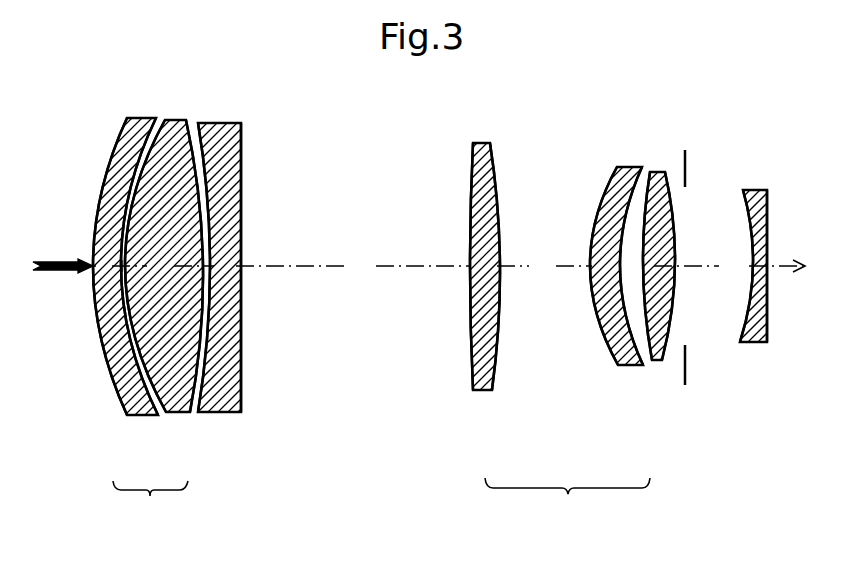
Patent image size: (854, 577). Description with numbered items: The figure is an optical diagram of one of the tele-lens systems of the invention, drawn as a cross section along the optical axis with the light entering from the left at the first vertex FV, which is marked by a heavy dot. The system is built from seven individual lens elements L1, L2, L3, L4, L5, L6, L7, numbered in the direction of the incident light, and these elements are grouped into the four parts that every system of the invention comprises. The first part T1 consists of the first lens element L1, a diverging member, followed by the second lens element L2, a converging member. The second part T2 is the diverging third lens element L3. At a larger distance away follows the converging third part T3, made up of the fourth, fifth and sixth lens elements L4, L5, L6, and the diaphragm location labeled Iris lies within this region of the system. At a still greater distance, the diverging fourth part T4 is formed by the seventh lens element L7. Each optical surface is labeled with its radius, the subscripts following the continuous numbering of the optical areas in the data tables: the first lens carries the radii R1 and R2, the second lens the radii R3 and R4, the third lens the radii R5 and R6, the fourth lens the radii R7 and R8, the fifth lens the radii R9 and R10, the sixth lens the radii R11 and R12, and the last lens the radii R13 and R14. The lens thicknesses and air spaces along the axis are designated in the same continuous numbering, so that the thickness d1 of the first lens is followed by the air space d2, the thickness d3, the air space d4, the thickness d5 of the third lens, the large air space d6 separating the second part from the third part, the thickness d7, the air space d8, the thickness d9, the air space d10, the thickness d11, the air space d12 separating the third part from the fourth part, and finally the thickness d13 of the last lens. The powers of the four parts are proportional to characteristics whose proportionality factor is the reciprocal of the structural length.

The first vertex FV is at (88, 264).
The first lens element L1 is at (145, 404).
The second lens element L2 is at (175, 404).
The third lens element L3 is at (218, 410).
The fourth lens element L4 is at (482, 390).
The fifth lens element L5 is at (620, 367).
The sixth lens element L6 is at (655, 361).
The seventh lens element L7 is at (755, 343).
The first part T1 is at (150, 498).
The second part T2 is at (232, 485).
The third part T3 is at (568, 496).
The fourth part T4 is at (755, 456).
The diaphragm location Iris is at (684, 372).
The radius of first optical area R1 is at (110, 152).
The radius of second optical area R2 is at (143, 122).
The radius of third optical area R3 is at (169, 121).
The radius of fourth optical area R4 is at (191, 125).
The radius of fifth optical area R5 is at (198, 136).
The radius of sixth optical area R6 is at (242, 165).
The radius of seventh optical area R7 is at (470, 168).
The radius of eighth optical area R8 is at (497, 175).
The radius of ninth optical area R9 is at (606, 196).
The radius of tenth optical area R10 is at (635, 167).
The radius of eleventh optical area R11 is at (653, 172).
The radius of twelfth optical area R12 is at (676, 204).
The radius of thirteenth optical area R13 is at (743, 205).
The radius of fourteenth optical area R14 is at (768, 205).
The lens thickness d1 is at (107, 274).
The air space d2 is at (118, 272).
The lens thickness d3 is at (164, 274).
The air space d4 is at (208, 285).
The lens thickness d5 is at (225, 274).
The air space d6 is at (355, 271).
The lens thickness d7 is at (485, 273).
The air space d8 is at (545, 272).
The lens thickness d9 is at (605, 272).
The air space d10 is at (639, 272).
The lens thickness d11 is at (665, 256).
The air space d12 is at (715, 269).
The lens thickness d13 is at (758, 254).